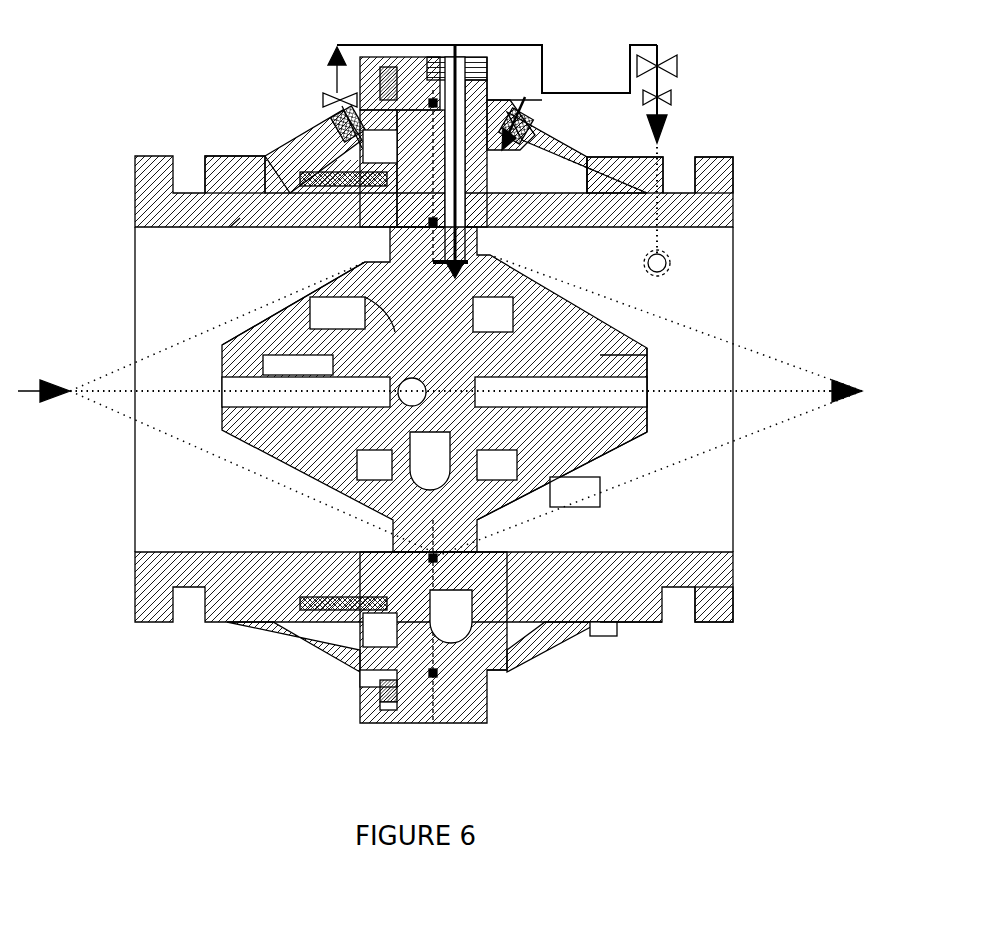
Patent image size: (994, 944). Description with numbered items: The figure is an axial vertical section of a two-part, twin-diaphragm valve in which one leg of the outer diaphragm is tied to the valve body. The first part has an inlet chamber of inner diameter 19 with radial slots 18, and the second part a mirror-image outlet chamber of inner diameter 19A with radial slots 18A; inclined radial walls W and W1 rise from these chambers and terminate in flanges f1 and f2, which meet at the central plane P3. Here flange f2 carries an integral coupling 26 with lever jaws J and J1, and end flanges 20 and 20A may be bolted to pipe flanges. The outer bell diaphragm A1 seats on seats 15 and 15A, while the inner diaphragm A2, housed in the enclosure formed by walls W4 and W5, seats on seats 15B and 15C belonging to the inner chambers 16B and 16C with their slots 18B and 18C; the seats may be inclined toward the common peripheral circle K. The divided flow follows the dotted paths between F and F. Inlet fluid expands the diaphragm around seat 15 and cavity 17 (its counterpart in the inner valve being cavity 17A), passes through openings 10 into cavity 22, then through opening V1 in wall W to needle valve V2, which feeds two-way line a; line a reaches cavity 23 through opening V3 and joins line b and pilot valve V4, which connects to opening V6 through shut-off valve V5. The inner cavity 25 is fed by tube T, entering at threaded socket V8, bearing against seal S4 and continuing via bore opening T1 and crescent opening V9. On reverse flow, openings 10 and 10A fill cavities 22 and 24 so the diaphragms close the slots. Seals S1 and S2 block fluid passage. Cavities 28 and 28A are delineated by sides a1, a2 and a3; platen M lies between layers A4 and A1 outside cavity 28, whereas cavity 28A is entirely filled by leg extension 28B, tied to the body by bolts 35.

The flange 20 is at (152, 167).
The flange 20A is at (735, 158).
The cavity 28 is at (263, 157).
The cavity 28A is at (662, 553).
The extension of the cylindrical leg 28B is at (668, 160).
The inner diameter 19 is at (143, 240).
The inner diameter 19A is at (637, 553).
The outer wall W is at (295, 160).
The opening V1 is at (306, 150).
The needle valve V2 is at (322, 100).
The cavity 23 is at (533, 167).
The opening V3 is at (527, 138).
The line b is at (583, 93).
The pilot valve V4 is at (680, 66).
The shut off valve V5 is at (672, 97).
The line c is at (665, 122).
The opening V6 is at (653, 277).
The integral coupling 26 is at (370, 60).
The lever jaw J is at (392, 68).
The openings 10 is at (413, 163).
The threaded inlet socket V8 is at (470, 55).
The two way line a is at (525, 97).
The tube T is at (425, 268).
The seat 15 is at (300, 560).
The radial slots 18B is at (306, 392).
The radial slots 18C is at (561, 392).
The plane P3 is at (420, 550).
The wall W4 is at (353, 317).
The cavity 25 is at (493, 302).
The openings 10A is at (417, 307).
The cylindrical inlet chamber 16B is at (265, 365).
The cylindrical outlet chamber 16C is at (607, 405).
The bell type circular cavity 17A is at (392, 475).
The common peripheral circle K is at (535, 565).
The seat 15B is at (262, 356).
The seat 15C is at (650, 355).
The seat 15A is at (620, 553).
The fluid flow path end points F is at (65, 384).
The cavity 22 is at (333, 633).
The cavity 17 is at (435, 598).
The flange f1 is at (410, 670).
The lever jaw J1 is at (362, 685).
The seal S1 is at (378, 698).
The flange f2 is at (460, 683).
The outer wall W1 is at (575, 625).
The bolts 35 is at (620, 632).
The diaphragm A1 is at (240, 218).
The arcuate platen M is at (300, 183).
The layer A4 is at (320, 222).
The radial slots 18 is at (347, 220).
The cavity 24 is at (380, 283).
The seal S4 is at (470, 290).
The bore opening T1 is at (488, 252).
The radial slots 18A is at (553, 230).
The crescent shaped cut opening V9 is at (515, 300).
The wall W5 is at (575, 268).
The diaphragm A2 is at (613, 318).
The seal S2 is at (537, 523).
The side a3 is at (245, 583).
The side a2 is at (240, 597).
The side a1 is at (247, 623).